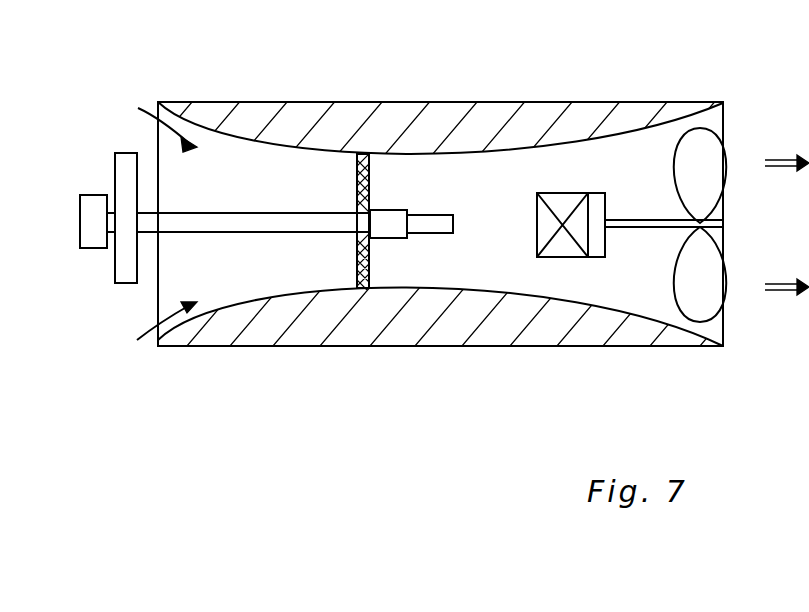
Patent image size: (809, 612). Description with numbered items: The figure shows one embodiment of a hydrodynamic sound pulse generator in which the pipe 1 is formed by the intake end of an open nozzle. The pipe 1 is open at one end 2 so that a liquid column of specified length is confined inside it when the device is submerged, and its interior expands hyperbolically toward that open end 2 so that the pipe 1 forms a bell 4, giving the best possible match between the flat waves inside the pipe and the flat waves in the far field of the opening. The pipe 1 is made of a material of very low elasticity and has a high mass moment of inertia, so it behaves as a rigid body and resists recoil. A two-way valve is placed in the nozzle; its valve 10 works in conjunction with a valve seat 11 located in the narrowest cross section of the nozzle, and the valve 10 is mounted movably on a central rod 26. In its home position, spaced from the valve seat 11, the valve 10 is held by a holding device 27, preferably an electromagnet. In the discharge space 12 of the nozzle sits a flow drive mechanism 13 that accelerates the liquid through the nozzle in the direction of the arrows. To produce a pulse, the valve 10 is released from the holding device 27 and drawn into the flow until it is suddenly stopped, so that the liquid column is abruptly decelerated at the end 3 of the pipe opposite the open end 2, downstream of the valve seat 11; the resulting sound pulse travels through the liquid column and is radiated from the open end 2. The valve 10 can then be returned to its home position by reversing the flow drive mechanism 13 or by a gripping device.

The pipe 1 is at (262, 163).
The open end of the pipe 2 is at (165, 346).
The end of the pipe opposite the open end 3 is at (316, 273).
The bell 4 is at (198, 310).
The valve 10 is at (128, 153).
The valve seat 11 is at (363, 283).
The discharge space 12 is at (475, 263).
The flow drive mechanism 13 is at (687, 288).
The central rod 26 is at (259, 224).
The holding device 27 is at (93, 203).